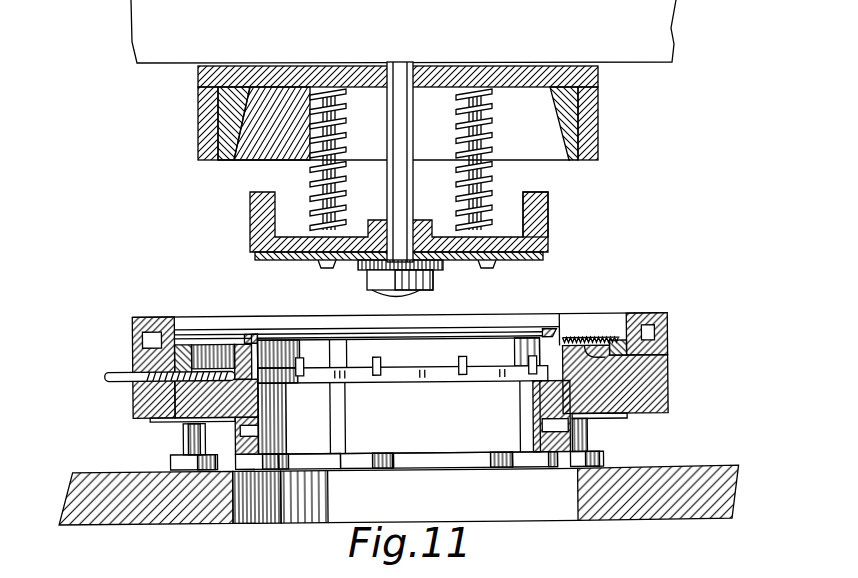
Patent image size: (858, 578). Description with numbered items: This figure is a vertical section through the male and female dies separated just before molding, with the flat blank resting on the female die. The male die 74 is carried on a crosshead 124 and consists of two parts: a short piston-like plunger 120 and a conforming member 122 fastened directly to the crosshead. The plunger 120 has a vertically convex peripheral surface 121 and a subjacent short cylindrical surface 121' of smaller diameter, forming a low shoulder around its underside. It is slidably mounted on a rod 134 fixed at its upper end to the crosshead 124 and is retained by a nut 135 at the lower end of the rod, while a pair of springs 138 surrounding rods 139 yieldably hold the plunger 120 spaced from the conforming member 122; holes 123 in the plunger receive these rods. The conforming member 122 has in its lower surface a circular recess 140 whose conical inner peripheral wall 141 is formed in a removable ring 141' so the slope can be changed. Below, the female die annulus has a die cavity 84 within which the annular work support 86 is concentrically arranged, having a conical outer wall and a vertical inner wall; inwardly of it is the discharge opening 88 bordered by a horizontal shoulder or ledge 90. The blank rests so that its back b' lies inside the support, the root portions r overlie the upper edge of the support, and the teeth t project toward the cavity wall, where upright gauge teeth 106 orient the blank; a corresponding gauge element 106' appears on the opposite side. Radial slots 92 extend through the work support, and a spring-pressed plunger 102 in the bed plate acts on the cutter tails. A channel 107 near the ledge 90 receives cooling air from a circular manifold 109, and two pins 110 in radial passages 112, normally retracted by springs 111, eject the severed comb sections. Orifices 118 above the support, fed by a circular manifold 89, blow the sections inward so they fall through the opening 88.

The crosshead 124 is at (648, 28).
The rod 134 is at (418, 52).
The conforming member 122 is at (638, 121).
The ring 141' is at (187, 123).
The circular recess 140 is at (247, 150).
The conical inner peripheral wall 141 is at (594, 137).
The springs 138 is at (491, 147).
The rods 139 is at (492, 174).
The male die 74 is at (393, 172).
The plunger 120 is at (548, 224).
The convex peripheral surface 121 is at (567, 211).
The short cylindrical surface 121' is at (438, 246).
The spring tail 123 is at (492, 262).
The nut 135 is at (430, 280).
The teeth t is at (200, 343).
The root portions r is at (245, 341).
The back b' is at (263, 331).
The die cavity 84 is at (527, 320).
The annular work support 86 is at (563, 339).
The orifices 118 is at (622, 315).
The circular manifold 89 is at (656, 333).
The gauge teeth 106 is at (169, 367).
The housing insert 106' is at (672, 342).
The radial slots 92 is at (427, 352).
The channel 107 is at (547, 335).
The horizontal shoulder or ledge 90 is at (545, 372).
The discharge opening 88 is at (398, 396).
The common circular manifold 109 is at (540, 432).
The pins 110 is at (184, 421).
The springs 111 is at (185, 372).
The radial passages 112 is at (178, 384).
The spring-pressed plunger 102 is at (188, 440).